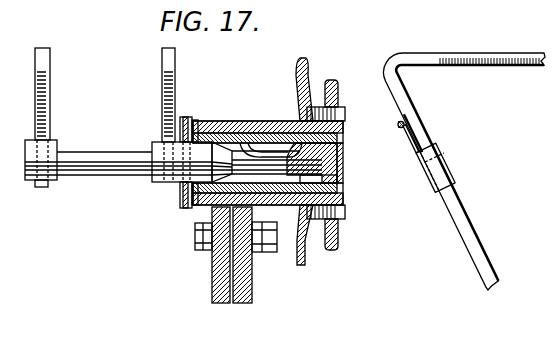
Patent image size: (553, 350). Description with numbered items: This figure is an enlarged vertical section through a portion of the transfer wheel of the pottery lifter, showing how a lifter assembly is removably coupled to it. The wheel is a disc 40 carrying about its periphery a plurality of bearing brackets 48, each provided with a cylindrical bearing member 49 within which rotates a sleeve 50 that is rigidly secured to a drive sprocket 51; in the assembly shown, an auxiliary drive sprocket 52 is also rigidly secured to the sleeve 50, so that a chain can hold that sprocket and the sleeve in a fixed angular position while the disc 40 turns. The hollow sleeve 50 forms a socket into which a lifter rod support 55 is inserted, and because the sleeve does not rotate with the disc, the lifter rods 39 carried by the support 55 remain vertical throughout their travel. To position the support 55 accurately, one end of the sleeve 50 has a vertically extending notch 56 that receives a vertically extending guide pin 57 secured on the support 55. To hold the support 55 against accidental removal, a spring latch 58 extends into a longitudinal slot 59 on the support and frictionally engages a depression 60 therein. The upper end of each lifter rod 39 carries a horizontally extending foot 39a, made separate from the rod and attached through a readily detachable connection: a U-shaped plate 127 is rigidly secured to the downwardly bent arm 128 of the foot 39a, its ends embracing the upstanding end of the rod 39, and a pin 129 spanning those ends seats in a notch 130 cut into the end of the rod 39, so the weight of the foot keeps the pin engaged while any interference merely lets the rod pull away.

The lifter rod 39 is at (50, 80).
The foot 39a is at (476, 60).
The disc 40 is at (214, 278).
The bearing bracket 48 is at (252, 280).
The cylindrical bearing member 49 is at (247, 123).
The sleeve 50 is at (344, 139).
The drive sprocket 51 is at (338, 93).
The auxiliary drive sprocket 52 is at (308, 78).
The lifter rod support 55 is at (105, 175).
The notch 56 is at (189, 118).
The guide pin 57 is at (199, 122).
The spring latch 58 is at (265, 148).
The longitudinal slot 59 is at (335, 160).
The depression 60 is at (342, 189).
The U-shaped plate 127 is at (432, 133).
The downwardly bent arm 128 is at (407, 105).
The pin 129 is at (403, 133).
The notch 130 is at (398, 126).